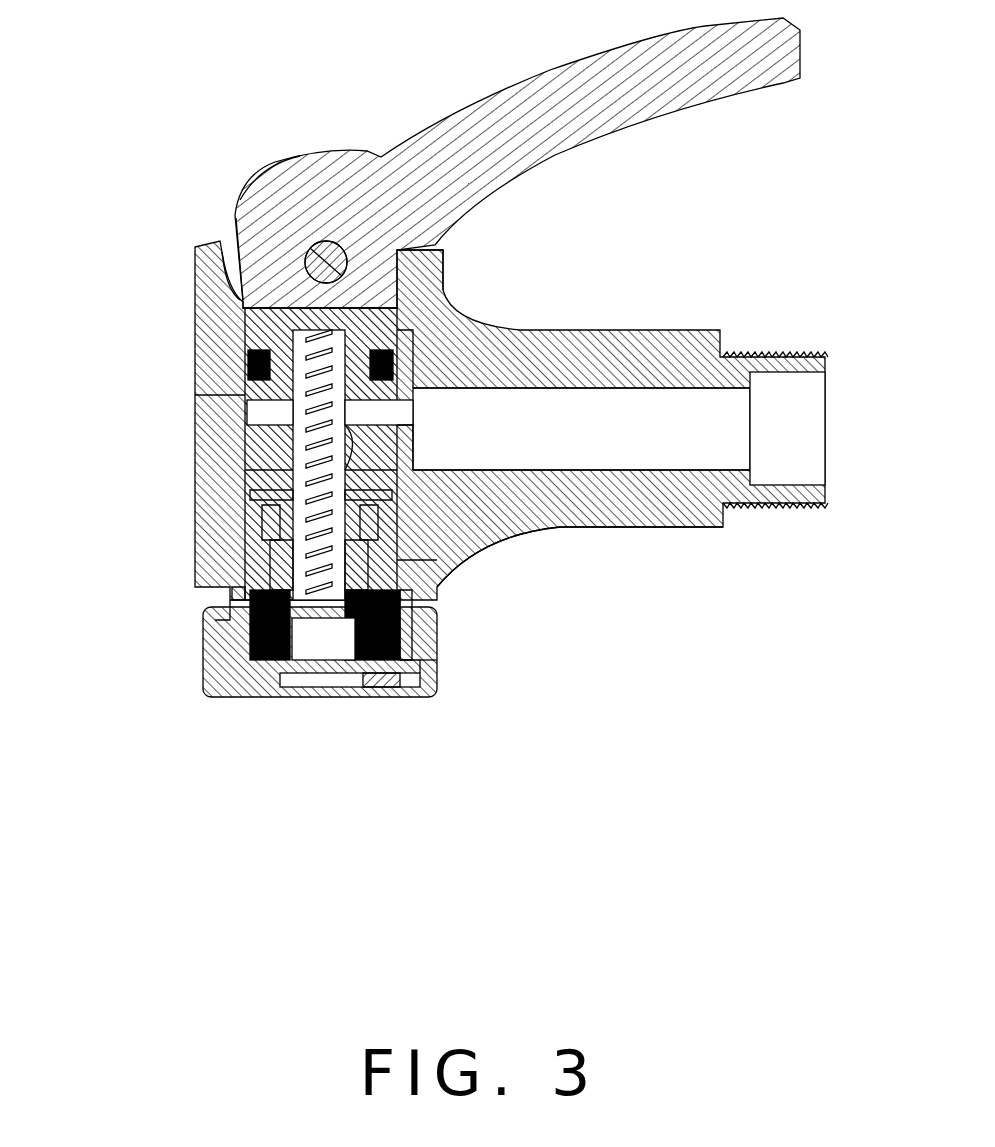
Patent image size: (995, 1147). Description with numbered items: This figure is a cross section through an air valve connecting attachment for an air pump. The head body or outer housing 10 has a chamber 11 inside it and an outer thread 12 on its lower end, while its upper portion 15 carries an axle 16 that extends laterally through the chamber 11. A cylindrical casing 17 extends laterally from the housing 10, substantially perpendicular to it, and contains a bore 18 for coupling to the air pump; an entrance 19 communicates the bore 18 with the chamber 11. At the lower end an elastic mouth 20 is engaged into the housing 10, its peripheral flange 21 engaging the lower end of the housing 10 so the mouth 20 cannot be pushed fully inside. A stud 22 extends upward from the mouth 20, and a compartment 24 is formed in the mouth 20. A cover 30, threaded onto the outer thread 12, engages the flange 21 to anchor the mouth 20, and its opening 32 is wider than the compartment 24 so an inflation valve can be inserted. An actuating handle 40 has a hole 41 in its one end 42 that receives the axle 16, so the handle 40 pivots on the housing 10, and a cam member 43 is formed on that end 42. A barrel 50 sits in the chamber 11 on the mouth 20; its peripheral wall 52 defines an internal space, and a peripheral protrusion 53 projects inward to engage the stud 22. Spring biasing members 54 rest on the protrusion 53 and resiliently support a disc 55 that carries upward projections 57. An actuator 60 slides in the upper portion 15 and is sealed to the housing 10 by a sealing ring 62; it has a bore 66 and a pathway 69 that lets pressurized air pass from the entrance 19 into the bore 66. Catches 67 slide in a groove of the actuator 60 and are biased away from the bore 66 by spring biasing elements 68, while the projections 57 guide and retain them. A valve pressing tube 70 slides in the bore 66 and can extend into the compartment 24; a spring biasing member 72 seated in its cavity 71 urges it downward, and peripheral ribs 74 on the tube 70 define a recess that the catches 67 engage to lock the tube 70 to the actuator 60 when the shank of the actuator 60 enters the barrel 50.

The head body or outer housing 10 is at (195, 266).
The chamber 11 is at (262, 412).
The outer thread 12 is at (212, 632).
The upper portion of the housing 15 is at (200, 240).
The axle 16 is at (322, 243).
The cylindrical casing 17 is at (680, 503).
The bore 18 is at (740, 360).
The entrance 19 is at (413, 453).
The elastic grasping member or mouth 20 is at (380, 688).
The peripheral flange 21 is at (398, 688).
The stud 22 is at (432, 670).
The compartment 24 is at (270, 695).
The cover 30 is at (210, 665).
The opening 32 is at (355, 687).
The actuating handle 40 is at (562, 78).
The aperture or hole 41 is at (337, 245).
The one end of the handle 42 is at (262, 192).
The cam member 43 is at (240, 230).
The cylindrical grasping member or barrel 50 is at (405, 620).
The peripheral wall 52 is at (415, 600).
The peripheral protrusion 53 is at (245, 603).
The spring biasing members 54 is at (270, 548).
The plate or partition or disc 55 is at (262, 515).
The projections 57 is at (500, 540).
The actuating member or actuator 60 is at (245, 345).
The sealing ring 62 is at (430, 410).
The bore of the actuator 66 is at (440, 325).
The catches 67 is at (245, 470).
The spring biasing elements 68 is at (250, 497).
The pathway 69 is at (425, 395).
The valve pressing member or tube 70 is at (312, 606).
The cavity 71 is at (430, 558).
The spring biasing member 72 is at (250, 378).
The peripheral flanges or ribs 74 is at (422, 405).